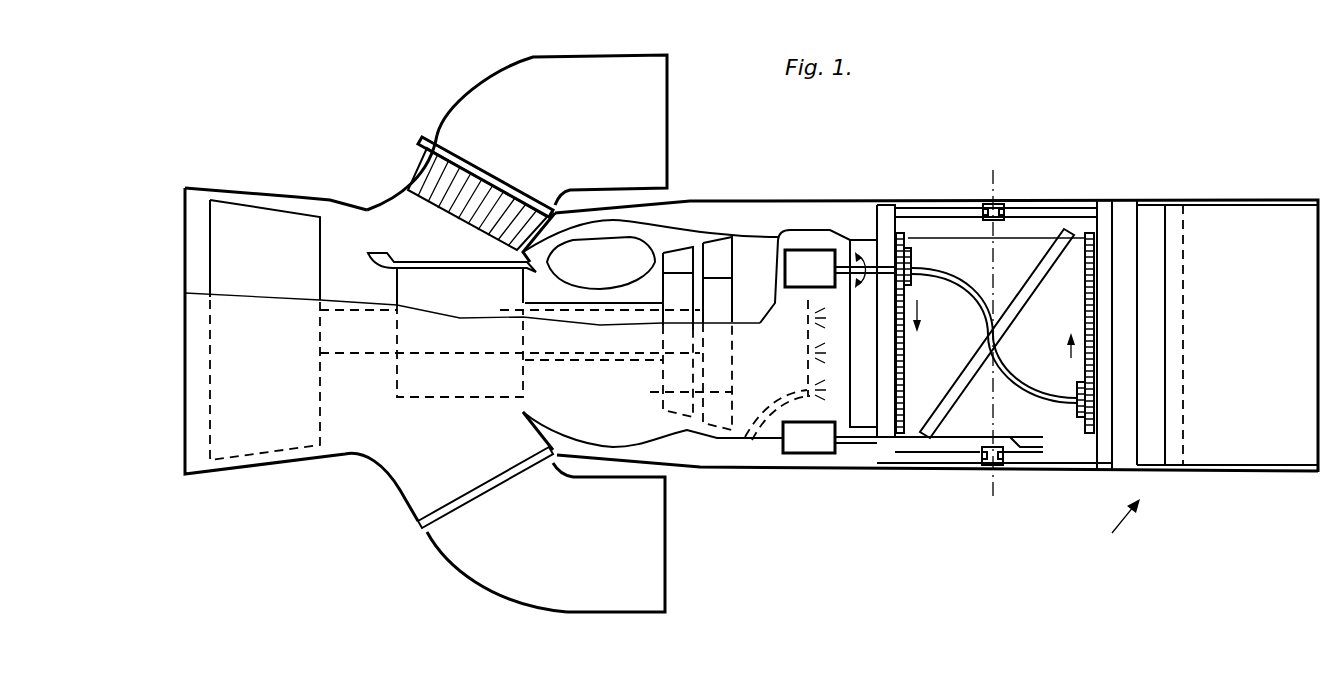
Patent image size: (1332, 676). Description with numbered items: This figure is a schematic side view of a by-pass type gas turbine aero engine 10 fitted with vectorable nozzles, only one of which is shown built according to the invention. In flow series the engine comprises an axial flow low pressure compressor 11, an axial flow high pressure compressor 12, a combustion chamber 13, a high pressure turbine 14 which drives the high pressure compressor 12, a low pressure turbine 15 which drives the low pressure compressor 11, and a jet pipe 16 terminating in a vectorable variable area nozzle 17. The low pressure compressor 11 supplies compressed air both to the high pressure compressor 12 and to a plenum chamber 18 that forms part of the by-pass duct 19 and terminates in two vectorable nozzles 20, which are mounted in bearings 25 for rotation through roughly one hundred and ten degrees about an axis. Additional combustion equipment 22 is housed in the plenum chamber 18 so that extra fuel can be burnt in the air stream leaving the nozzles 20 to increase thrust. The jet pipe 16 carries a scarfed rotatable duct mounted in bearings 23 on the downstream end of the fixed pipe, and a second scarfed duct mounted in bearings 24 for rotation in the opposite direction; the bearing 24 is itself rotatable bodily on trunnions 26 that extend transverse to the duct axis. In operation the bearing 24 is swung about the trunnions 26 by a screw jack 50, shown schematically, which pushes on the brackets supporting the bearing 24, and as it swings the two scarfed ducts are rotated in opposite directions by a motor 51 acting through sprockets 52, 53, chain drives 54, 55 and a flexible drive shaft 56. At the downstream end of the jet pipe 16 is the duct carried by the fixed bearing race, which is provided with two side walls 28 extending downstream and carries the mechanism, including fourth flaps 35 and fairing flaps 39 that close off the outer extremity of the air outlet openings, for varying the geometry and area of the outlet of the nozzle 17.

The gas turbine aero engine 10 is at (278, 192).
The low pressure compressor 11 is at (215, 212).
The high pressure compressor 12 is at (418, 280).
The combustion chamber 13 is at (608, 250).
The high pressure turbine 14 is at (678, 245).
The low pressure turbine 15 is at (720, 250).
The jet pipe 16 is at (798, 230).
The vectorable variable area nozzle 17 is at (1120, 532).
The plenum chamber 18 is at (418, 212).
The by-pass duct 19 is at (348, 440).
The vectorable nozzles 20 is at (614, 70).
The additional combustion equipment 22 is at (462, 238).
The bearings 23 is at (888, 215).
The bearings 24 is at (1103, 222).
The bearings 25 is at (446, 122).
The trunnions 26 is at (985, 203).
The side walls 28 is at (1177, 203).
The fourth flap 35 is at (1255, 228).
The fairing flaps 39 is at (1152, 222).
The screw jack 50 is at (812, 438).
The motor 51 is at (817, 250).
The sprocket 52 is at (908, 250).
The sprocket 53 is at (1080, 390).
The chain drive 54 is at (905, 393).
The chain drive 55 is at (1088, 296).
The flexible drive shaft 56 is at (973, 292).